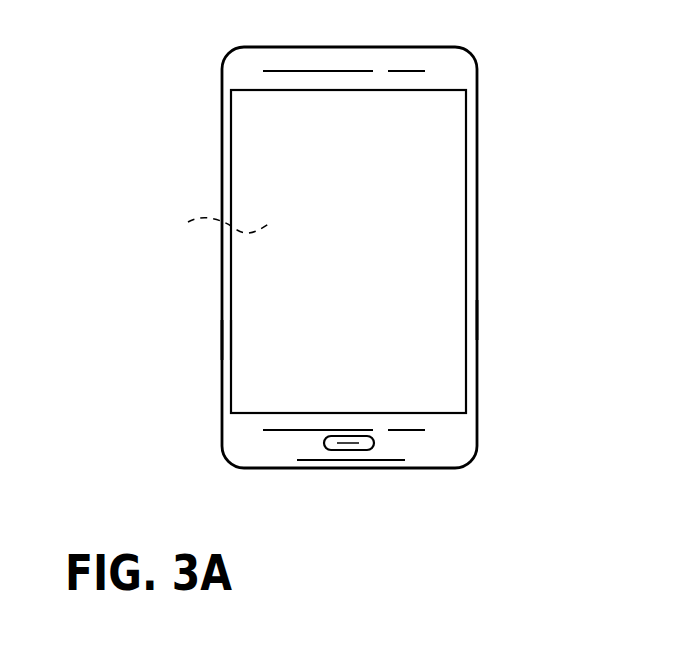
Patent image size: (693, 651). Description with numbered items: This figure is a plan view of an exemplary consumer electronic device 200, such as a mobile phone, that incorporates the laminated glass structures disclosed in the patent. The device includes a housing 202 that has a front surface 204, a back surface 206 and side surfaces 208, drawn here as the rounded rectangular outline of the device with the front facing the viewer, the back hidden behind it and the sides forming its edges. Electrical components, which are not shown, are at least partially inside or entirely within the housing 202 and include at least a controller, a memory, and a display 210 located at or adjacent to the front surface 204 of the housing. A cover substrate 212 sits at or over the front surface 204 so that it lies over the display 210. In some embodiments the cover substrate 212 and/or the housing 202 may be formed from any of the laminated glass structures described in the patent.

The consumer electronic device 200 is at (497, 105).
The housing 202 is at (245, 81).
The front surface 204 is at (447, 443).
The back surface 206 is at (207, 227).
The side surfaces 208 is at (477, 318).
The display 210 is at (415, 210).
The cover substrate 212 is at (272, 332).